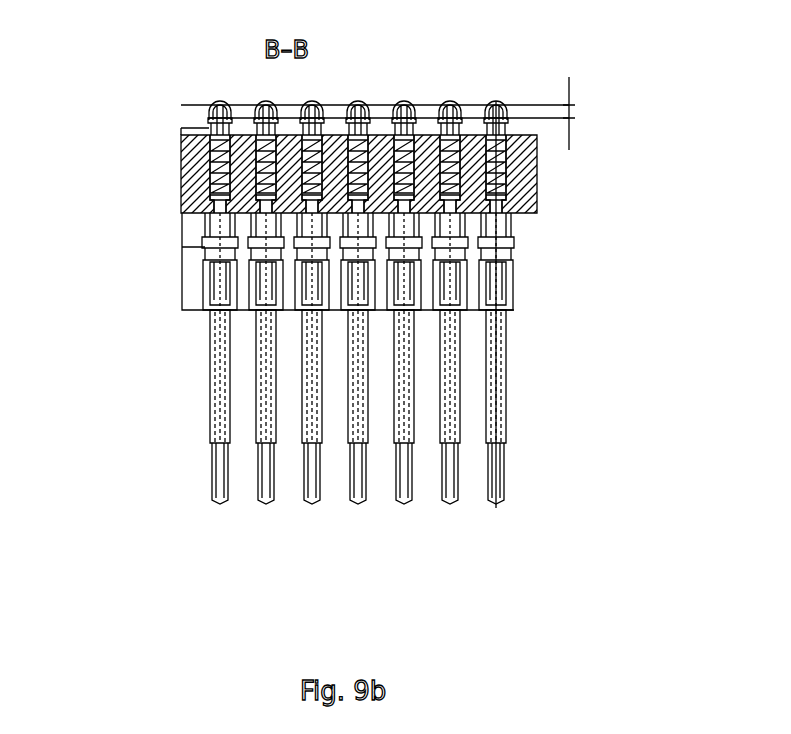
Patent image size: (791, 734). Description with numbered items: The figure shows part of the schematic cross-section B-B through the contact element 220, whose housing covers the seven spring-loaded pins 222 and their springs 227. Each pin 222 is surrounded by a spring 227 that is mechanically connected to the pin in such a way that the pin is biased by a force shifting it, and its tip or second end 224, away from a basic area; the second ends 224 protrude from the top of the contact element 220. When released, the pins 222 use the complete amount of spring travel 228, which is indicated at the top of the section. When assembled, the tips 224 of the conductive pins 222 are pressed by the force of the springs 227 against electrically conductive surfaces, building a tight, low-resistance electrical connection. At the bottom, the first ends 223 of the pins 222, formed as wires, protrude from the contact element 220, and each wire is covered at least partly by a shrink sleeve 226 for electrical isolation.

The contact element 220 is at (182, 233).
The pin 222 is at (493, 192).
The first end 223 is at (502, 477).
The second end 224 is at (500, 103).
The shrink sleeve 226 is at (502, 357).
The spring 227 is at (510, 163).
The spring travel 228 is at (592, 113).